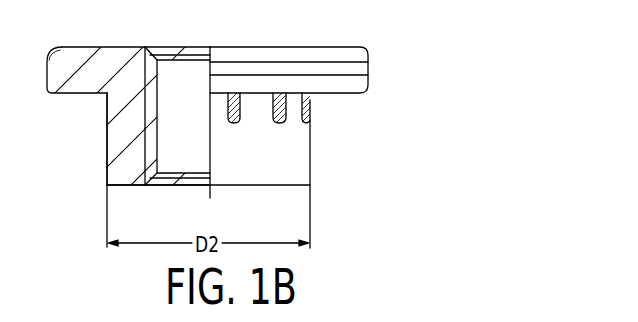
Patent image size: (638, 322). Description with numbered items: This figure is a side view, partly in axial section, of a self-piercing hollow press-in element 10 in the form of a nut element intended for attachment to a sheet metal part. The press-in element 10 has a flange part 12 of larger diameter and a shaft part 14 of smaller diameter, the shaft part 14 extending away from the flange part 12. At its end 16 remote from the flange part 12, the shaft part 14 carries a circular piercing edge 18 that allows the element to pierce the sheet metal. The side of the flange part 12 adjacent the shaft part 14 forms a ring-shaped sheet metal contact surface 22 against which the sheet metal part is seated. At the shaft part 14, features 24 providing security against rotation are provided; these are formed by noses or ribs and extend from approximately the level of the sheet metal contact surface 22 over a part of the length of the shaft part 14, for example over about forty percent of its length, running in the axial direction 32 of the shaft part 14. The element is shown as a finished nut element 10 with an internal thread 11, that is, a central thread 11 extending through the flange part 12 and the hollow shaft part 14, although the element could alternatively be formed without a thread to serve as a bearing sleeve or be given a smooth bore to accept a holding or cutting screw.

The press-in element 10 is at (387, 138).
The internal thread 11 is at (165, 91).
The flange part 12 is at (368, 62).
The shaft part 14 is at (311, 158).
The end 16 is at (134, 186).
The piercing edge 18 is at (106, 167).
The sheet metal contact surface 22 is at (71, 96).
The features providing security against rotation 24 is at (310, 104).
The axial direction 32 is at (213, 30).